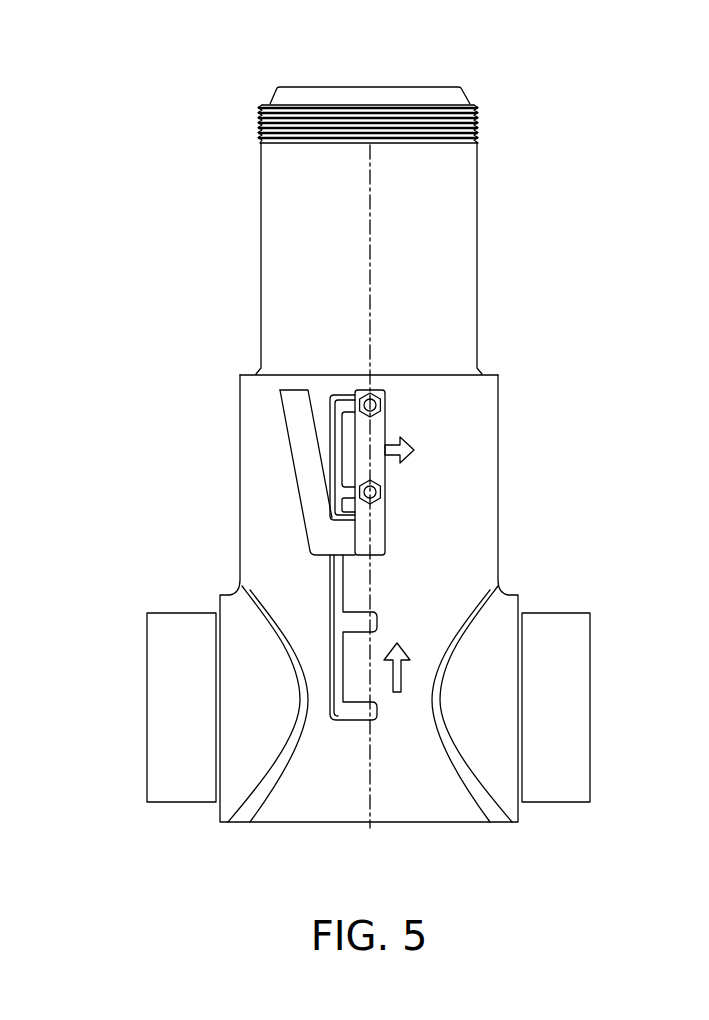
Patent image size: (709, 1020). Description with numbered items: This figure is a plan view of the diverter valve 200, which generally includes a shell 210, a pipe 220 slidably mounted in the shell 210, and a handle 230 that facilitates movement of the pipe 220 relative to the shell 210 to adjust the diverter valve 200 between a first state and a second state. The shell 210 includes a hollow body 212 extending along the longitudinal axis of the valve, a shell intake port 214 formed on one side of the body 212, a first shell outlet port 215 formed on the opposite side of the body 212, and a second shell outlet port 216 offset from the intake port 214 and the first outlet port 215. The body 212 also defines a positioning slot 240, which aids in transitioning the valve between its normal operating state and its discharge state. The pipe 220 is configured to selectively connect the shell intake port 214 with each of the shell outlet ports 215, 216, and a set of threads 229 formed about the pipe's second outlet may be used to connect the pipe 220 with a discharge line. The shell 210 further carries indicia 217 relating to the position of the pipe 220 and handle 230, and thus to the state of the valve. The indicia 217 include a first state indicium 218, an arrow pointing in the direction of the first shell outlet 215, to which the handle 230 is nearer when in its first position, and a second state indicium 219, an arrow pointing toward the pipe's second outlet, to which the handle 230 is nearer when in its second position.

The diverter valve 200 is at (193, 108).
The shell 210 is at (192, 470).
The hollow body 212 is at (497, 410).
The shell intake port 214 is at (118, 738).
The first shell outlet port 215 is at (624, 738).
The second shell outlet port 216 is at (497, 347).
The indicia 217 is at (418, 783).
The first state indicium 218 is at (437, 452).
The second state indicium 219 is at (423, 640).
The pipe 220 is at (261, 257).
The set of threads 229 is at (480, 113).
The handle 230 is at (255, 496).
The positioning slot 240 is at (300, 606).